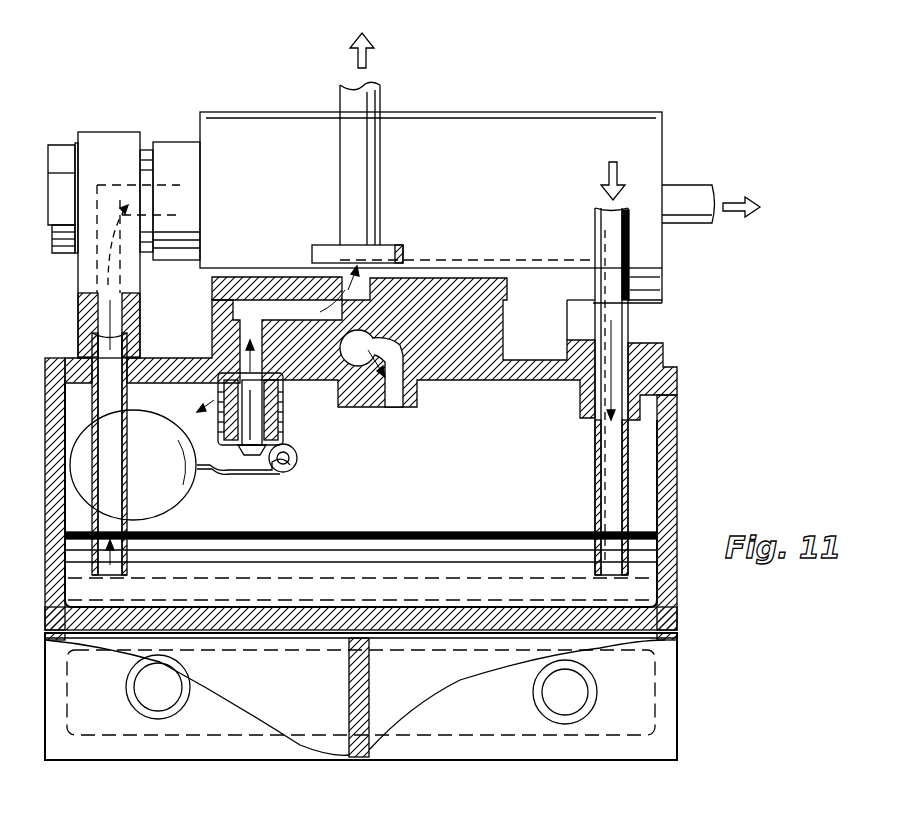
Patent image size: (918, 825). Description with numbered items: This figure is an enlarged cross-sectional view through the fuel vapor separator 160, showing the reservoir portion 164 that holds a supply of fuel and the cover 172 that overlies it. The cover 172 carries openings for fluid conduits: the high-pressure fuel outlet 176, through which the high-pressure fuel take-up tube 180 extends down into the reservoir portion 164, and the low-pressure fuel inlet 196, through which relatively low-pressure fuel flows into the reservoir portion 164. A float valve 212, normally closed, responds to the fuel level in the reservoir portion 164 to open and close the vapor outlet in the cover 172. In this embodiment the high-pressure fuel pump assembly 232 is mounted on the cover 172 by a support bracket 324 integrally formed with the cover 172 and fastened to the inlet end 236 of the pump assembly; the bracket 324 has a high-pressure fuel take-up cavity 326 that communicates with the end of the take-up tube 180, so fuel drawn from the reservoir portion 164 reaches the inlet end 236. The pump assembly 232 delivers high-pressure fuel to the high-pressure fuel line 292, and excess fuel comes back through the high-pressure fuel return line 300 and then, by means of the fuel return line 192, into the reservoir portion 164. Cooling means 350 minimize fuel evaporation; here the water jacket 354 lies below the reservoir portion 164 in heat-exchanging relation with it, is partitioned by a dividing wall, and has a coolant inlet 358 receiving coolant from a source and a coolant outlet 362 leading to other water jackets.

The fuel vapor separator 160 is at (665, 440).
The reservoir portion 164 is at (56, 478).
The cover 172 is at (668, 378).
The high-pressure fuel outlet 176 is at (92, 352).
The high-pressure fuel take-up tube 180 is at (125, 405).
The fuel return line 192 is at (595, 457).
The low-pressure fuel inlet 196 is at (398, 408).
The float valve 212 is at (303, 443).
The high-pressure fuel pump assembly 232 is at (474, 187).
The inlet end 236 is at (175, 142).
The high-pressure fuel line 292 is at (718, 170).
The high-pressure fuel return line 300 is at (612, 256).
The support bracket 324 is at (118, 138).
The high-pressure fuel take-up cavity 326 is at (98, 265).
The fuel vapor separator cooling means 350 is at (697, 668).
The water jacket 354 is at (445, 726).
The coolant inlet 358 is at (178, 712).
The coolant outlet 362 is at (570, 714).